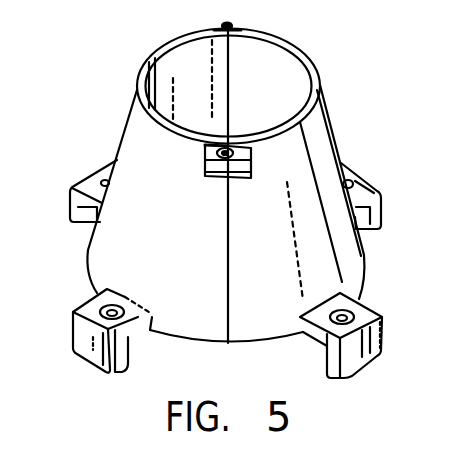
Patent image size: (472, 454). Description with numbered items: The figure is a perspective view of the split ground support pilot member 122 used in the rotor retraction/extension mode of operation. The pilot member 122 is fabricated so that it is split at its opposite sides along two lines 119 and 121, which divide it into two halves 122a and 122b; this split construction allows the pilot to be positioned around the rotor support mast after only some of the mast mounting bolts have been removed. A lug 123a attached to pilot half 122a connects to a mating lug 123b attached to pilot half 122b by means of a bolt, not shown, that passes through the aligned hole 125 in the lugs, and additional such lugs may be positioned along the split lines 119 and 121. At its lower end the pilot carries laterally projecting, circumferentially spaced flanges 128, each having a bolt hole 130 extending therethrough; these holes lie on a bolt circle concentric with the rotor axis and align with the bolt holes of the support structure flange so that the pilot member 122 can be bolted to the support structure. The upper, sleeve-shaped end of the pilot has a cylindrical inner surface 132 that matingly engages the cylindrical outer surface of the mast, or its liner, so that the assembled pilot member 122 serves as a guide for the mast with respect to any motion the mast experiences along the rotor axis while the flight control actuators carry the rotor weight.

The split line 119 is at (228, 260).
The split line 121 is at (228, 74).
The split ground support pilot member 122 is at (373, 129).
The pilot half 122a is at (120, 237).
The pilot half 122b is at (362, 249).
The lug 123a is at (212, 152).
The lug 123b is at (233, 178).
The screw hole 125 is at (220, 176).
The flange 128 is at (92, 177).
The bolt hole 130 is at (108, 308).
The cylindrical inner surface 132 is at (176, 66).